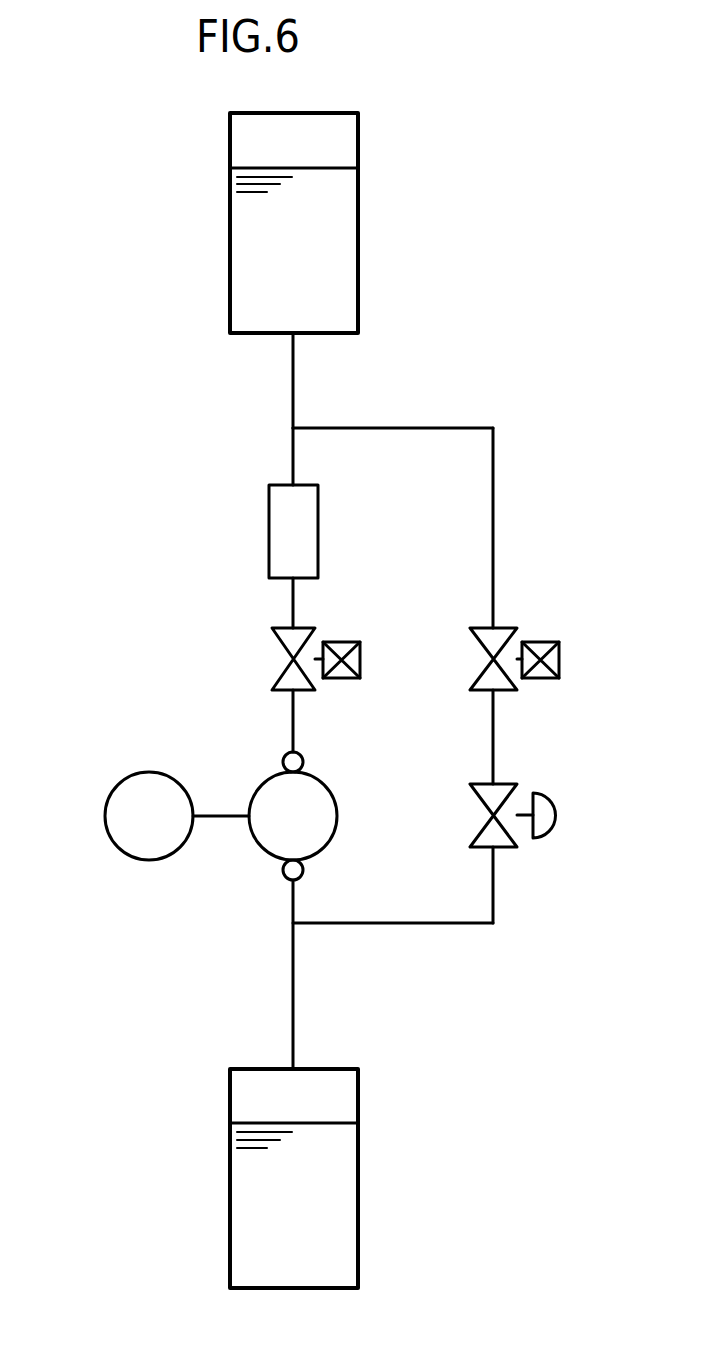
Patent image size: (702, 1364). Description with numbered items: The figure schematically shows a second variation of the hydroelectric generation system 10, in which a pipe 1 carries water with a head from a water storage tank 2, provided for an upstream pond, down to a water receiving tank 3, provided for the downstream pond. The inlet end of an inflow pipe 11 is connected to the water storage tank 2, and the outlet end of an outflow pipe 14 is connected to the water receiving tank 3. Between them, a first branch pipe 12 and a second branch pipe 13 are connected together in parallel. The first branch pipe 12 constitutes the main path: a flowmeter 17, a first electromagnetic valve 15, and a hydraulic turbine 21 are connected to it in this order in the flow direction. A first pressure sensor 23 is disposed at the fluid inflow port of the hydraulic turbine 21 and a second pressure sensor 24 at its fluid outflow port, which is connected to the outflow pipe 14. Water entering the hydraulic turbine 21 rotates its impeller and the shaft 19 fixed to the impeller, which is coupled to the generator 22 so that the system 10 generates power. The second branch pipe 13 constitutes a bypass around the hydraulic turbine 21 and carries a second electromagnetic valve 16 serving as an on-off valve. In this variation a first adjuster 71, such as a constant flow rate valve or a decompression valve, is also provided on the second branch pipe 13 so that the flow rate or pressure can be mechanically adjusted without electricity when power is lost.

The hydroelectric generation system 10 is at (502, 295).
The water storage tank 2 is at (358, 285).
The water receiving tank 3 is at (358, 1253).
The pipe 1 is at (421, 428).
The inflow pipe 11 is at (293, 384).
The first branch pipe 12 is at (293, 604).
The second branch pipe 13 is at (493, 603).
The outflow pipe 14 is at (293, 1000).
The first electromagnetic valve 15 is at (285, 692).
The second electromagnetic valve 16 is at (502, 692).
The flowmeter 17 is at (269, 527).
The shaft 19 is at (220, 818).
The hydraulic turbine 21 is at (339, 816).
The generator 22 is at (105, 815).
The first pressure sensor 23 is at (304, 761).
The second pressure sensor 24 is at (304, 871).
The first adjuster 71 is at (500, 782).